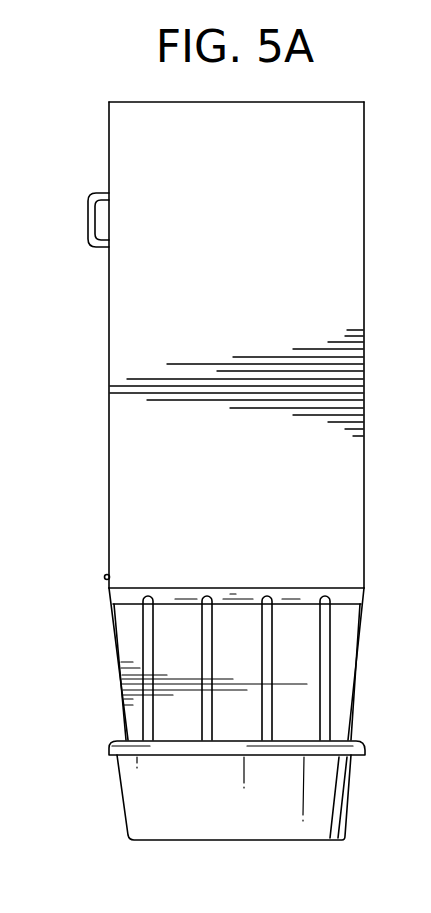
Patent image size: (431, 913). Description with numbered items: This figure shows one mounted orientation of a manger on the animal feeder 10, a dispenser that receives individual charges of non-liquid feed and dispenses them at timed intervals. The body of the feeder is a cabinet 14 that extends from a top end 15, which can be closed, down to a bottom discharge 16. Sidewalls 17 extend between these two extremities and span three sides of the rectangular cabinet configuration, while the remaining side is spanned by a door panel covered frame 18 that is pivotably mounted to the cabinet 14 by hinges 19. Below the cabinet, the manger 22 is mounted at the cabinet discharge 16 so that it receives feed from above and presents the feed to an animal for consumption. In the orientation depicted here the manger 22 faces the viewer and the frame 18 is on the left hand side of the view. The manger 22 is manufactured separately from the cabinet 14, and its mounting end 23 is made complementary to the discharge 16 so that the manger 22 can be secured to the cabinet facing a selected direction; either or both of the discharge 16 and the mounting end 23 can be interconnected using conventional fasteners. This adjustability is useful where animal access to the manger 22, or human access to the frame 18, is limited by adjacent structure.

The animal feeder 10 is at (86, 137).
The cabinet 14 is at (101, 365).
The top end 15 is at (333, 102).
The bottom discharge 16 is at (340, 590).
The sidewalls 17 is at (148, 460).
The door panel covered frame 18 is at (86, 242).
The hinges 19 is at (104, 577).
The manger 22 is at (108, 704).
The mounting end 23 is at (132, 608).